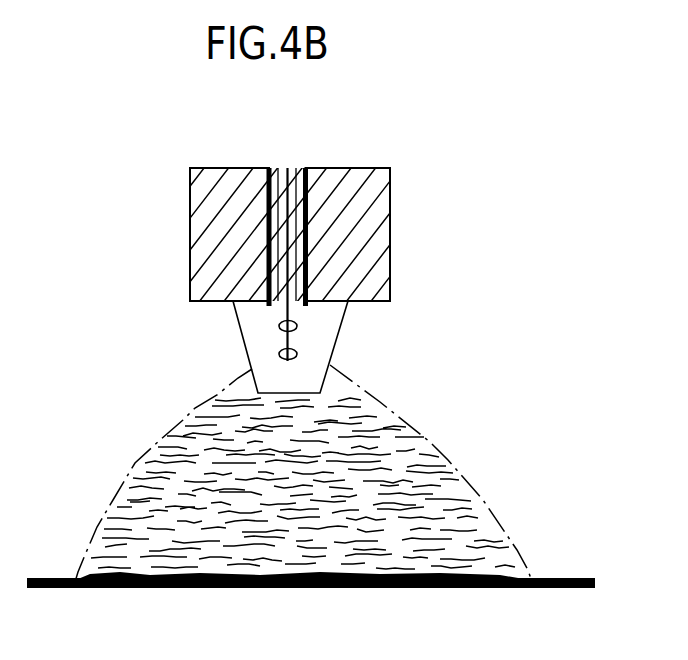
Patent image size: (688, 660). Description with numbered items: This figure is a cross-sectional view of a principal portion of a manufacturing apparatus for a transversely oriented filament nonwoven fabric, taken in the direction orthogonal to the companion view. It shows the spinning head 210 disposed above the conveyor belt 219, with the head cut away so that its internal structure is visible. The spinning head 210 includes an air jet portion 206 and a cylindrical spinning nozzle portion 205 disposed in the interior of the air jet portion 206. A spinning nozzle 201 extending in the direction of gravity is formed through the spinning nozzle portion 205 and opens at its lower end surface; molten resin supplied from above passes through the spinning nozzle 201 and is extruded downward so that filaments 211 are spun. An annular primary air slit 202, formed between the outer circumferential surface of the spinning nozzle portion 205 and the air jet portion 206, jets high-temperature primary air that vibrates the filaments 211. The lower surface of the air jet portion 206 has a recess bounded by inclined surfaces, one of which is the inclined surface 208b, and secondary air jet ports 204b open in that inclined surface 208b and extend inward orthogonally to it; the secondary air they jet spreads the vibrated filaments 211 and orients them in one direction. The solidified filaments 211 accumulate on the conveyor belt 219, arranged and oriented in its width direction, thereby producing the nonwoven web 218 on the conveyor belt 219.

The spinning head 210 is at (216, 186).
The air jet portion 206 is at (332, 210).
The primary air slit 202 is at (267, 307).
The spinning nozzle portion 205 is at (291, 316).
The secondary air jet ports 204b is at (298, 327).
The inclined surface 208b is at (330, 313).
The spinning nozzle 201 is at (278, 327).
The filaments 211 is at (276, 346).
The nonwoven web 218 is at (127, 570).
The conveyor belt 219 is at (425, 590).